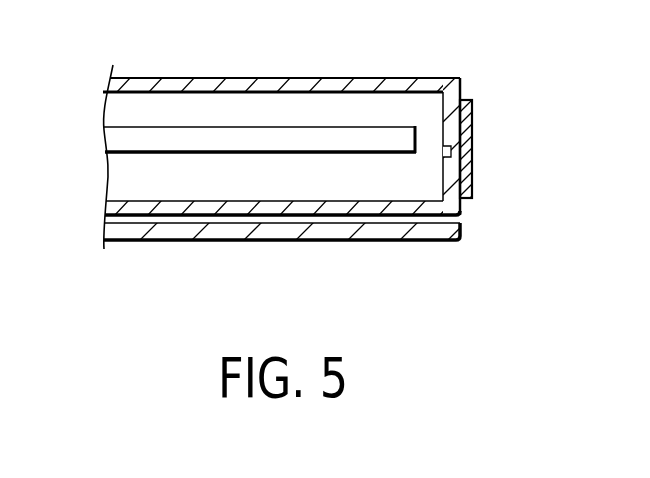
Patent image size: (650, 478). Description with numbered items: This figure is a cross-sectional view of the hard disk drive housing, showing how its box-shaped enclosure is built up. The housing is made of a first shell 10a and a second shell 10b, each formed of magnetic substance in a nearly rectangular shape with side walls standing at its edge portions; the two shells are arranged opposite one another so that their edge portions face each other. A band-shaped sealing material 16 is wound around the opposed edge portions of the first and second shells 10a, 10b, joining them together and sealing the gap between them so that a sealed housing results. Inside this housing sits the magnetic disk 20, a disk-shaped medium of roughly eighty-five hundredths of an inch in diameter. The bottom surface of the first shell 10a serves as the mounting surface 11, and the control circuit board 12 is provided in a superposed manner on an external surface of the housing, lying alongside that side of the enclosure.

The first shell 10a is at (338, 207).
The second shell 10b is at (352, 88).
The mounting surface 11 is at (250, 216).
The control circuit board 12 is at (173, 231).
The sealing material 16 is at (470, 140).
The magnetic disk 20 is at (257, 127).